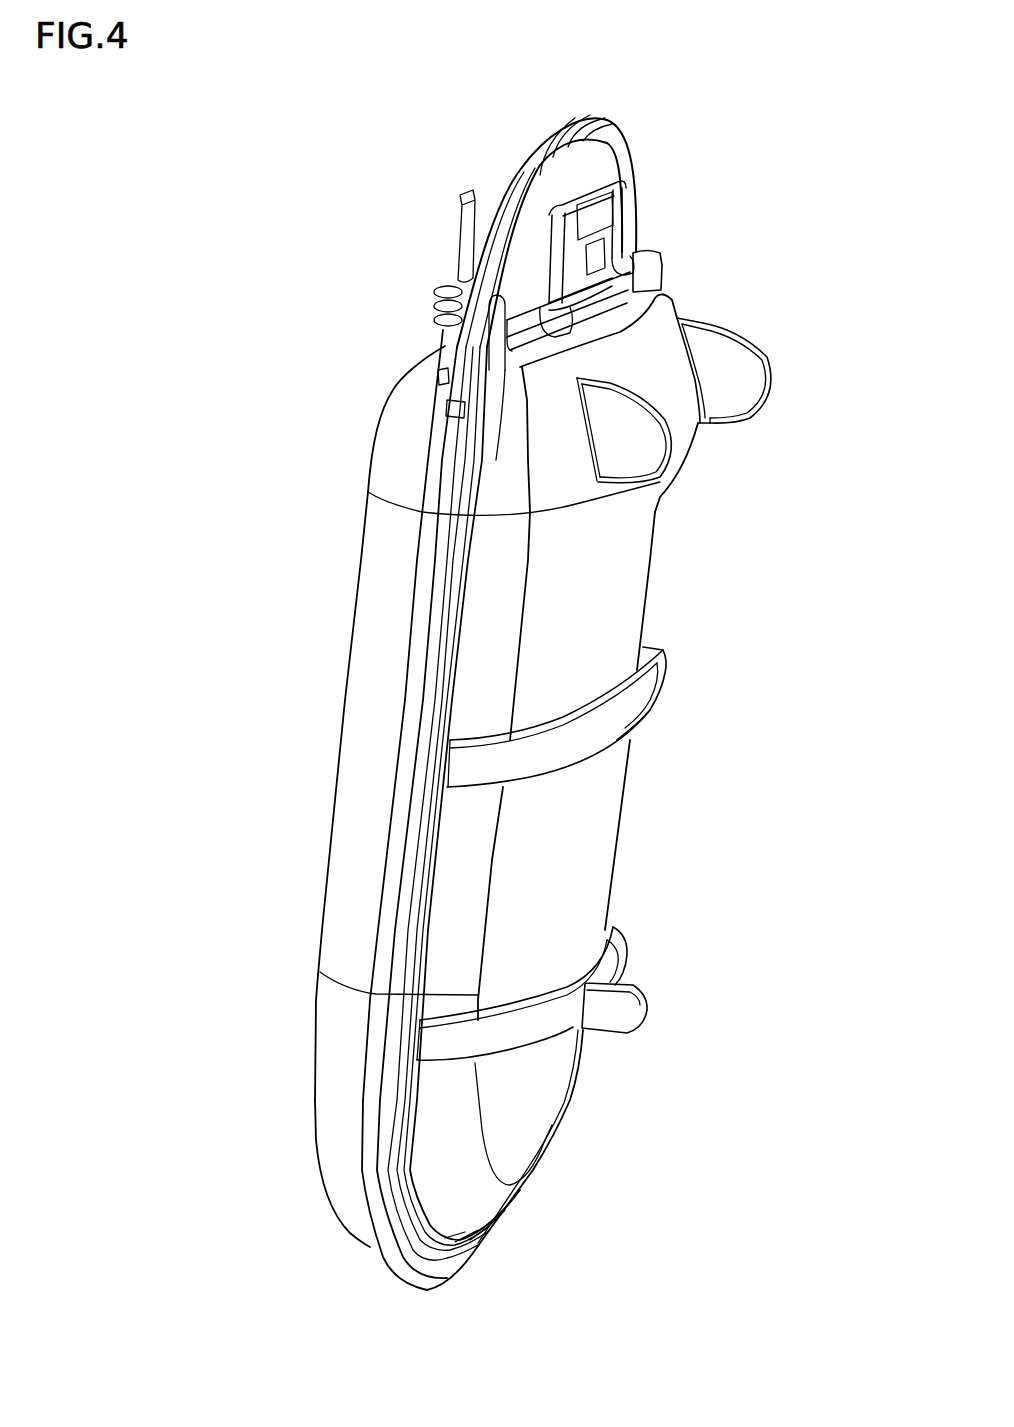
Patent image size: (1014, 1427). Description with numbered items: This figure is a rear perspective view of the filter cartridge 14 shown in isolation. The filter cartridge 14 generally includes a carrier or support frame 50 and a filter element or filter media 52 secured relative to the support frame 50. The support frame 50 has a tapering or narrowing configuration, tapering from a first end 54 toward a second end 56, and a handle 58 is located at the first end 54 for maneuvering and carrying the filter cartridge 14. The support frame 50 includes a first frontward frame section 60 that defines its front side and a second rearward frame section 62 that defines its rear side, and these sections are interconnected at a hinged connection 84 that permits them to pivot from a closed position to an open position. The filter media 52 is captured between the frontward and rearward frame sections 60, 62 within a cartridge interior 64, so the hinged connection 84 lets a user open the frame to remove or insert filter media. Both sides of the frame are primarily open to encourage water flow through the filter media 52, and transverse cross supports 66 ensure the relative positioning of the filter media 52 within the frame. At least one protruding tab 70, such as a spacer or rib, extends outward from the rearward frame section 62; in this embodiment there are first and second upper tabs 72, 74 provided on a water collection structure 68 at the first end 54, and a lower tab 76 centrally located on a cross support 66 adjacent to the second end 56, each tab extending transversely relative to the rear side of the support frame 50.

The filter cartridge 14 is at (326, 197).
The support frame 50 is at (378, 376).
The filter media 52 is at (631, 594).
The first end 54 is at (727, 265).
The second end 56 is at (310, 1272).
The handle 58 is at (610, 142).
The first frontward frame section 60 is at (327, 992).
The second rearward frame section 62 is at (452, 1127).
The cartridge interior 64 is at (598, 916).
The transverse cross supports 66 is at (652, 703).
The water collection structure 68 is at (677, 390).
The protruding tab 70 is at (644, 358).
The first upper tab 72 is at (640, 445).
The second upper tab 74 is at (758, 363).
The lower tab 76 is at (635, 1020).
The hinged connection 84 is at (659, 204).